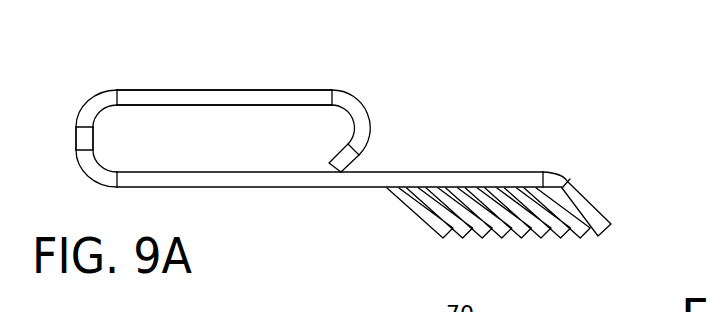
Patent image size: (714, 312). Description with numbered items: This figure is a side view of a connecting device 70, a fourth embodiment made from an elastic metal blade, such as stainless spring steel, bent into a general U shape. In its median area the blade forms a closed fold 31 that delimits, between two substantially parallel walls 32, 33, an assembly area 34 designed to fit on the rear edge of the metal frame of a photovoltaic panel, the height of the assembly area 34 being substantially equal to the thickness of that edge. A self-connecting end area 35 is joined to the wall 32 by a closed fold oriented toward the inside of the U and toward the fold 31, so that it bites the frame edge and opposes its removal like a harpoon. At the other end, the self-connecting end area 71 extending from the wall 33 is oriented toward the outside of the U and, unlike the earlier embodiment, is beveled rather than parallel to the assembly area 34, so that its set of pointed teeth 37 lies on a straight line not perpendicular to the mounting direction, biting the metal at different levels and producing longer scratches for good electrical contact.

The closed fold 31 is at (78, 125).
The wall 32 is at (213, 90).
The wall 33 is at (277, 187).
The assembly area 34 is at (177, 133).
The self-connecting end area 35 is at (367, 153).
The teeth 37 is at (495, 230).
The connecting device 70 is at (267, 80).
The self-connecting end area 71 is at (593, 197).